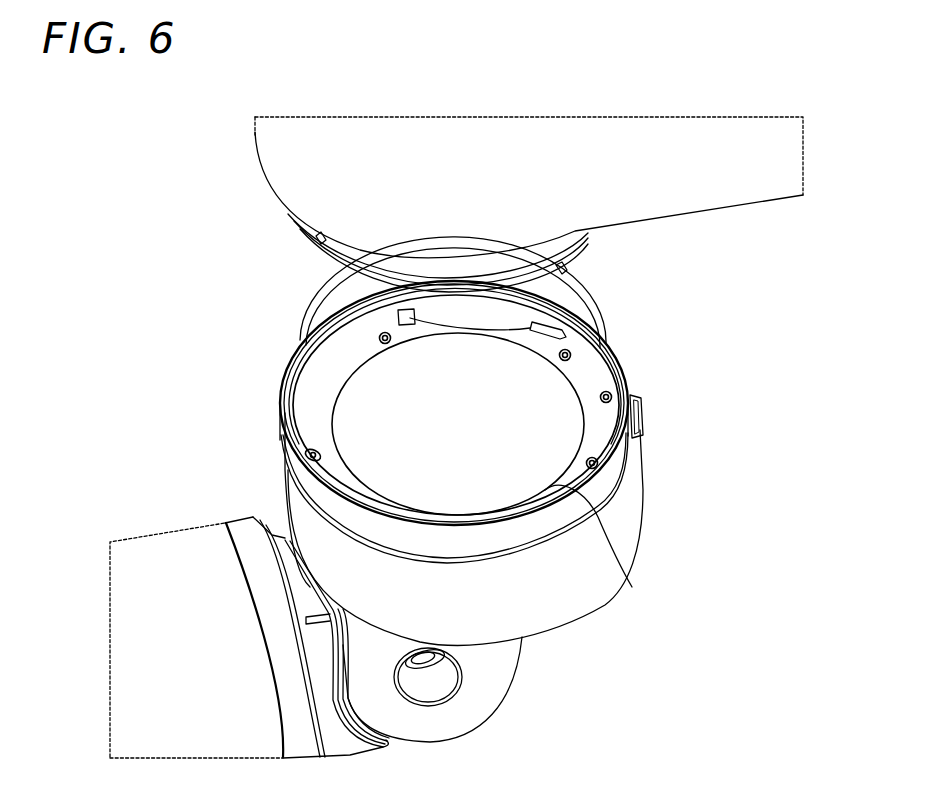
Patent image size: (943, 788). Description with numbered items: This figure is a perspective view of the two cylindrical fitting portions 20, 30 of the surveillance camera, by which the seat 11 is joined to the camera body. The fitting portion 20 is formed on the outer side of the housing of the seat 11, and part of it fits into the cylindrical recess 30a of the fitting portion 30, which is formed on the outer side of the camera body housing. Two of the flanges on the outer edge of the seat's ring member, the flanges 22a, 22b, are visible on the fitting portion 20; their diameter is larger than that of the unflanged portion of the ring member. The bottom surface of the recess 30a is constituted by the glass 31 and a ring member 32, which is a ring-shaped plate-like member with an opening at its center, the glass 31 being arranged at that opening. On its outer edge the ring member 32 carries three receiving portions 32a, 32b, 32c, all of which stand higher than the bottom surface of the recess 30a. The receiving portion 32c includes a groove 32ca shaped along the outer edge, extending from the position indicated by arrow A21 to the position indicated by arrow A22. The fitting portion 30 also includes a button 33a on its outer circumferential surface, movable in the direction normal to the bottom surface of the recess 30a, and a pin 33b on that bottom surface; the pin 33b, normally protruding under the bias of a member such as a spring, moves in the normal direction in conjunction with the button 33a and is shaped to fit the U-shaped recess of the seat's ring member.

The seat 11 is at (518, 116).
The fitting portion 20 is at (377, 260).
The flange 22a is at (317, 238).
The flange 22b is at (576, 242).
The fitting portion 30 is at (327, 500).
The recess 30a is at (407, 420).
The glass 31 is at (468, 447).
The ring member 32 is at (577, 476).
The receiving portion 32a is at (282, 388).
The receiving portion 32b is at (603, 443).
The receiving portion 32c is at (535, 300).
The groove 32ca is at (488, 317).
The button 33a is at (641, 402).
The pin 33b is at (607, 390).
The arrow A21 is at (404, 328).
The arrow A22 is at (533, 366).